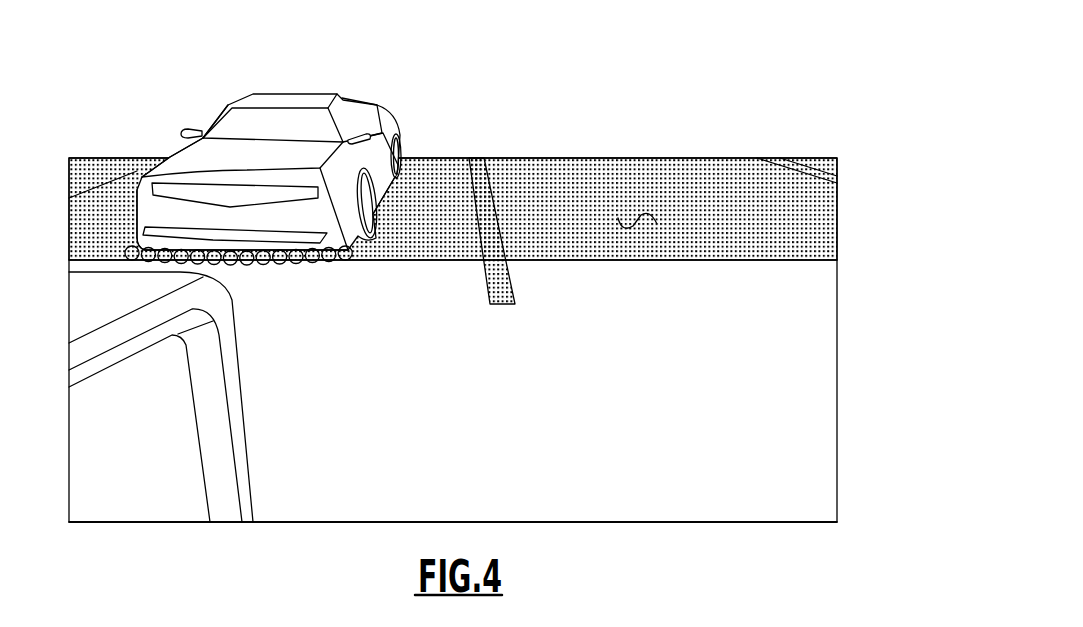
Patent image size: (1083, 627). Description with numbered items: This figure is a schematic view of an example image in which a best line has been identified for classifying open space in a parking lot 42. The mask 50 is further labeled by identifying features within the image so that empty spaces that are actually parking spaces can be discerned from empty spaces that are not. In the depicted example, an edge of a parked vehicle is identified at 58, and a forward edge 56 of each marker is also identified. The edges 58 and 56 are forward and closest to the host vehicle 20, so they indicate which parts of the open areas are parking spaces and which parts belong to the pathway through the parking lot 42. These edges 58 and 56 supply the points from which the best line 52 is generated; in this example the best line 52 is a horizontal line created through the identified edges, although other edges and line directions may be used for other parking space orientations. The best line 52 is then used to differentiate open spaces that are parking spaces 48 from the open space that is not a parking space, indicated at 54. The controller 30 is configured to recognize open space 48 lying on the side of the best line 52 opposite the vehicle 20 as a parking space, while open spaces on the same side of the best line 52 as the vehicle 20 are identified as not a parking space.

The vehicle 20 is at (152, 317).
The parking lot 42 is at (852, 158).
The parking space 48 is at (639, 217).
The mask 50 is at (810, 299).
The best line 52 is at (792, 260).
The open space that is not a parking space 54 is at (728, 477).
The forward edge 56 is at (498, 288).
The edge of the vehicle 58 is at (263, 266).
The controller 30 is at (269, 172).